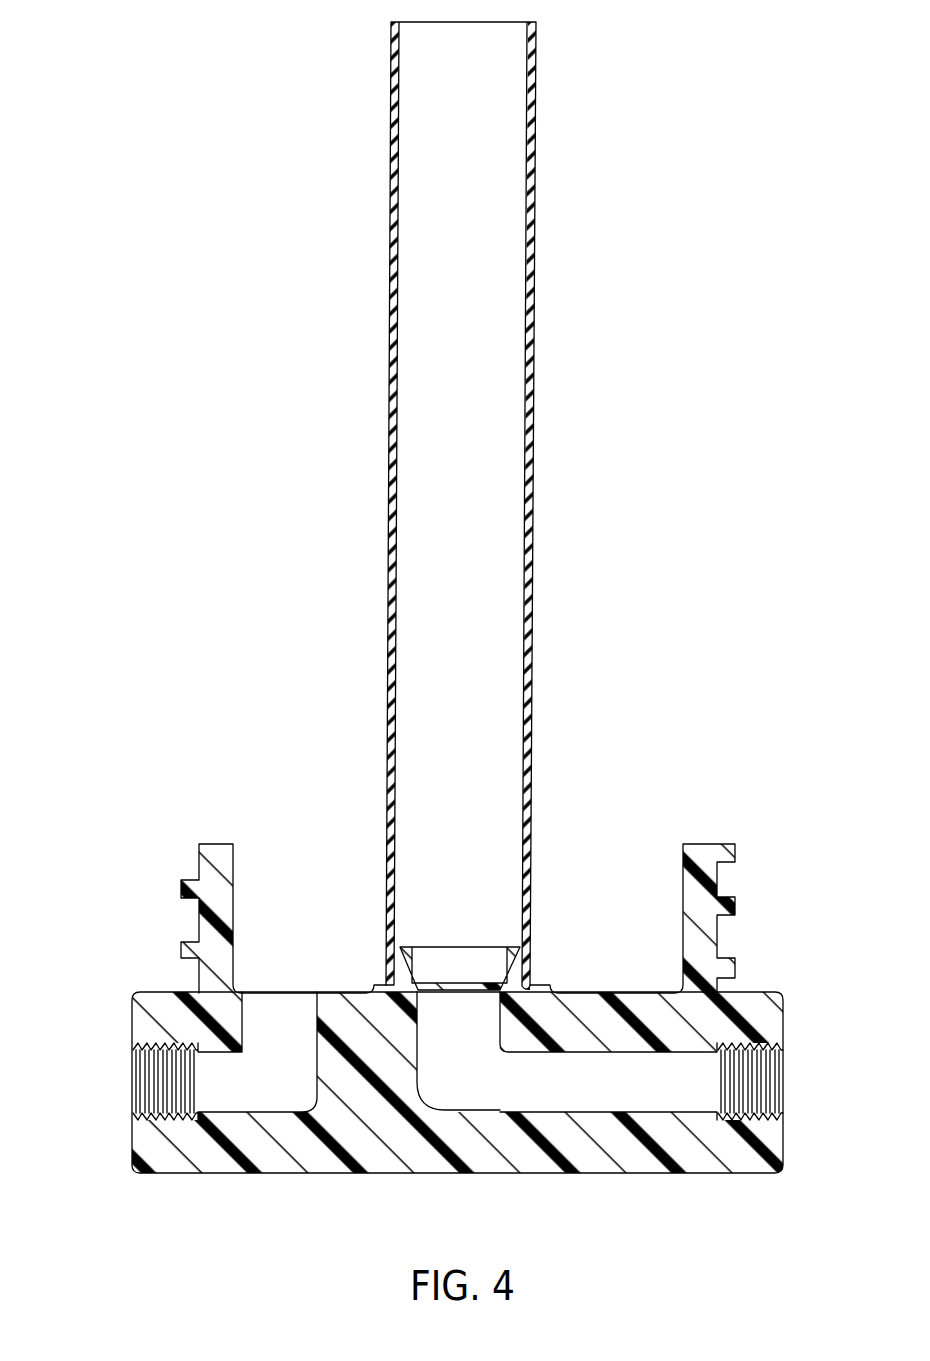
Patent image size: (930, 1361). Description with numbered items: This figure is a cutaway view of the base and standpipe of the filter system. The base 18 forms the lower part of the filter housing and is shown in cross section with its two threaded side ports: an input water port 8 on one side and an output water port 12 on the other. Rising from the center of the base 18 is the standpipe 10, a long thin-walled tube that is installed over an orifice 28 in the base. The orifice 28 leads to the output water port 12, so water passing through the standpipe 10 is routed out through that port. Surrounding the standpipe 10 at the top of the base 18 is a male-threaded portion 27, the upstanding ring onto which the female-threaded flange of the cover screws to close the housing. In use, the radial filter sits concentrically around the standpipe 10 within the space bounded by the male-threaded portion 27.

The input water port 8 is at (215, 1080).
The standpipe 10 is at (535, 207).
The output water port 12 is at (685, 1080).
The base 18 is at (738, 1148).
The male-threaded portion 27 is at (200, 924).
The orifice 28 is at (457, 1003).